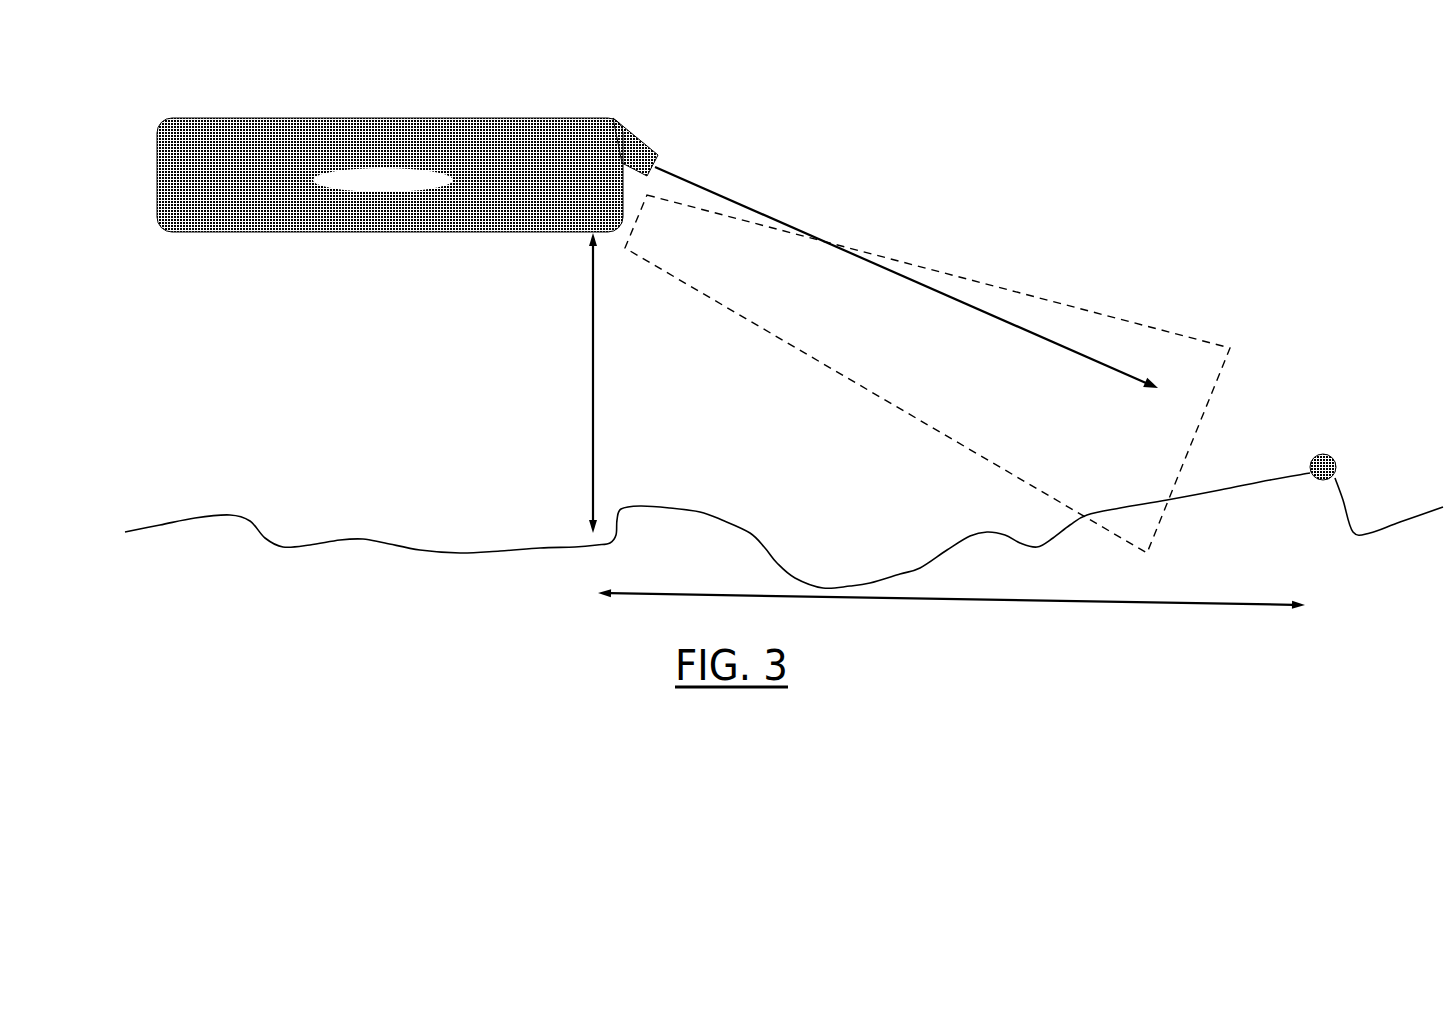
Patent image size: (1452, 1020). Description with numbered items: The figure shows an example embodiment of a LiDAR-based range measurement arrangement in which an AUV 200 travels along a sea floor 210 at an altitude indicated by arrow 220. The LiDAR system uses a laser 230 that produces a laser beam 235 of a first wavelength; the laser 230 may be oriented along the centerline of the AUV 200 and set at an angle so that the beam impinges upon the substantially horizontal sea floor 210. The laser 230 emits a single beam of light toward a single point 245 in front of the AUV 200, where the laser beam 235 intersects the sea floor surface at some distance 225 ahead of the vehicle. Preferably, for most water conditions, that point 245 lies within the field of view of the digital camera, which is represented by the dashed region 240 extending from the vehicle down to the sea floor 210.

The AUV 200 is at (390, 141).
The sea floor 210 is at (784, 524).
The altitude arrow 220 is at (538, 383).
The distance 225 is at (951, 621).
The laser 230 is at (690, 121).
The laser beam 235 is at (906, 277).
The field of view of the digital camera 240 is at (952, 374).
The single point 245 is at (1369, 437).